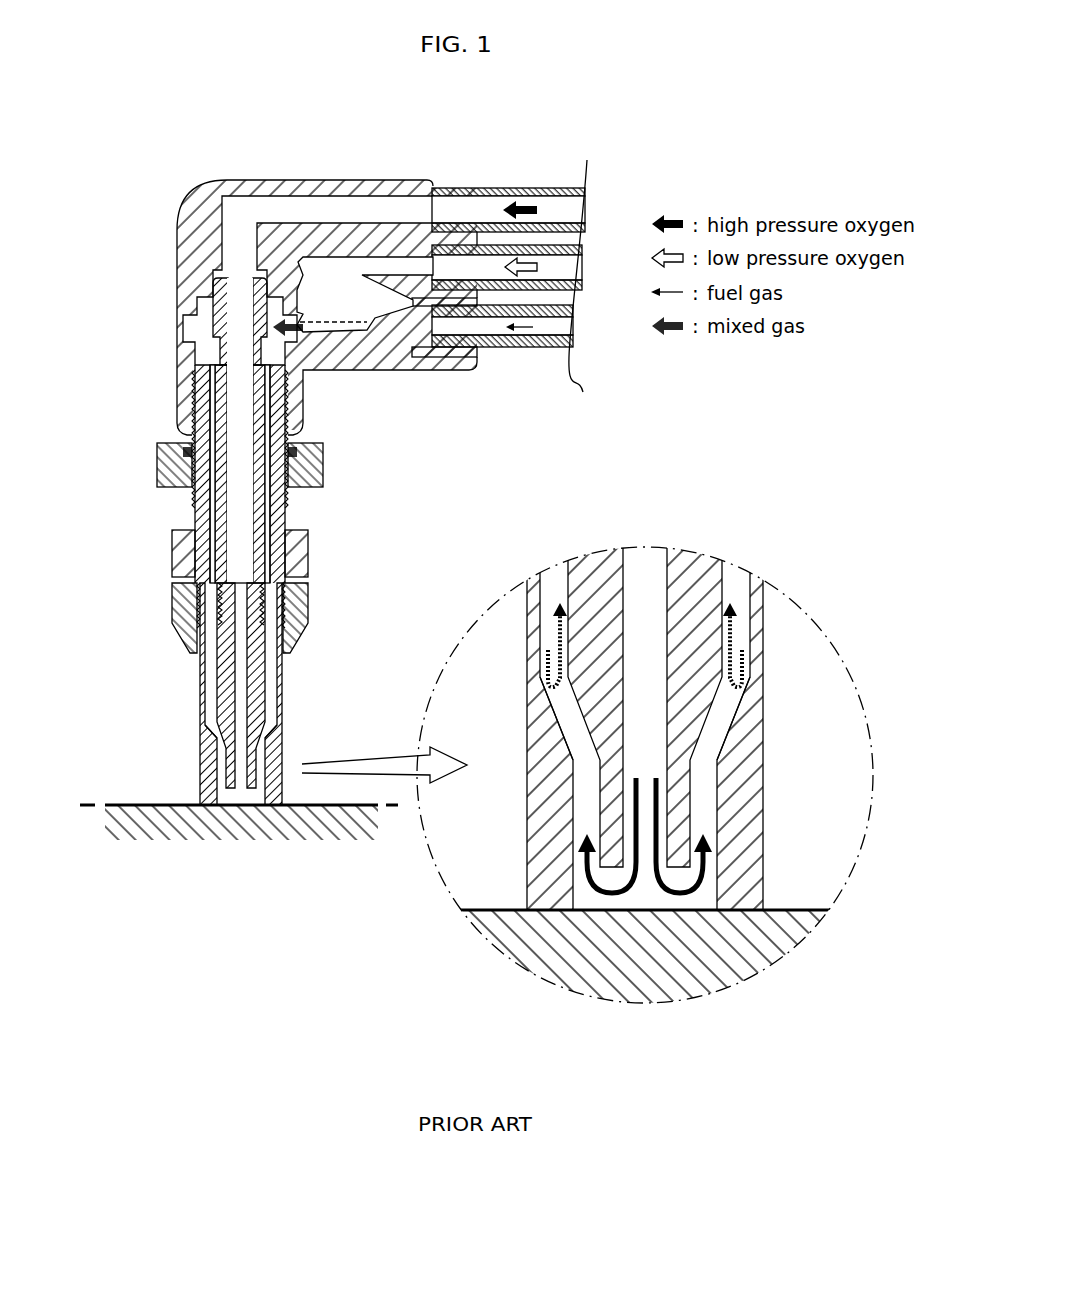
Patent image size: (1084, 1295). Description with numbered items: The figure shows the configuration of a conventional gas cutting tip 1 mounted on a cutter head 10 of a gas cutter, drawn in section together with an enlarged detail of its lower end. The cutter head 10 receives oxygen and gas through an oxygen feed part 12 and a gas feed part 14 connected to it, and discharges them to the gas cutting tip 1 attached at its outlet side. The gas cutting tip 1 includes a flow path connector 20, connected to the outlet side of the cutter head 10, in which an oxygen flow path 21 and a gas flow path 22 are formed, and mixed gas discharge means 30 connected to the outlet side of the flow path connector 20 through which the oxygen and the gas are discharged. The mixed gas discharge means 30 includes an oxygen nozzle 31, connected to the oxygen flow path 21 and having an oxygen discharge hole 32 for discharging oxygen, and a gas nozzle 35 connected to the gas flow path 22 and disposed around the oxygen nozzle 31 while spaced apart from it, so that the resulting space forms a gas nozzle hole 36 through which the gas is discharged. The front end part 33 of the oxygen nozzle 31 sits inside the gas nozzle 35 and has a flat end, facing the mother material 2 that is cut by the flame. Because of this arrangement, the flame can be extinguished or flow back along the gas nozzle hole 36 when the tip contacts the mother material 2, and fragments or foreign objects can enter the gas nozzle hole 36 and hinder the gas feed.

The gas cutting tip 1 is at (427, 580).
The mother material 2 is at (312, 842).
The cutter head 10 is at (323, 183).
The oxygen feed part 12 is at (378, 210).
The gas feed part 14 is at (357, 374).
The flow path connector 20 is at (172, 530).
The oxygen flow path 21 is at (238, 353).
The gas flow path 22 is at (207, 404).
The mixed gas discharge means 30 is at (427, 762).
The oxygen nozzle 31 is at (265, 633).
The oxygen discharge hole 32 is at (264, 690).
The front end part 33 is at (233, 806).
The gas nozzle 35 is at (207, 772).
The gas nozzle hole 36 is at (212, 727).